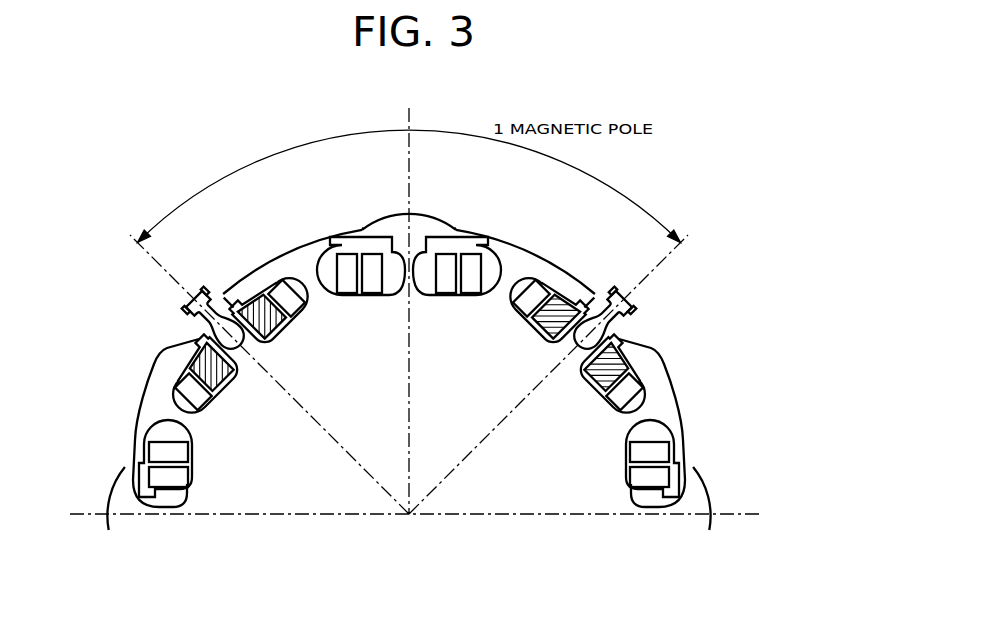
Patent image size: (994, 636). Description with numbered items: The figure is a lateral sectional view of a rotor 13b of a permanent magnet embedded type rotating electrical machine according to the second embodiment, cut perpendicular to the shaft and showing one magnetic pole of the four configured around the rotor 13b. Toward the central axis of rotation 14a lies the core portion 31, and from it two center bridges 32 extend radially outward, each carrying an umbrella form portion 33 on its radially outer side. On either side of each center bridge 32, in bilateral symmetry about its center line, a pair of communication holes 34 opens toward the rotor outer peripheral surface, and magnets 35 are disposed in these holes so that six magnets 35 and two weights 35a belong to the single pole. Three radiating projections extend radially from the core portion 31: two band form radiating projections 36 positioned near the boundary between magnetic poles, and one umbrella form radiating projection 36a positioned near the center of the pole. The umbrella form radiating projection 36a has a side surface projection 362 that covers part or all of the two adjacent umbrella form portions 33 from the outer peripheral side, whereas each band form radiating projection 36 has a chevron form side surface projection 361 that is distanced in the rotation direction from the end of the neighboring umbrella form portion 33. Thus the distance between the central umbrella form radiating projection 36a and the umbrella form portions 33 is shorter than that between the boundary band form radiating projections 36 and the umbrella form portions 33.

The rotor 13b is at (741, 286).
The central axis of rotation 14a is at (409, 520).
The core portion 31 is at (393, 446).
The center bridge 32 is at (513, 243).
The umbrella form portion 33 is at (530, 257).
The communication hole 34 is at (490, 244).
The magnet 35 is at (470, 294).
The weight 35a is at (524, 342).
The band form radiating projection 36 is at (405, 301).
The umbrella form radiating projection 36a is at (397, 224).
The chevron form side surface projection 361 is at (612, 289).
The side surface projection 362 is at (368, 228).